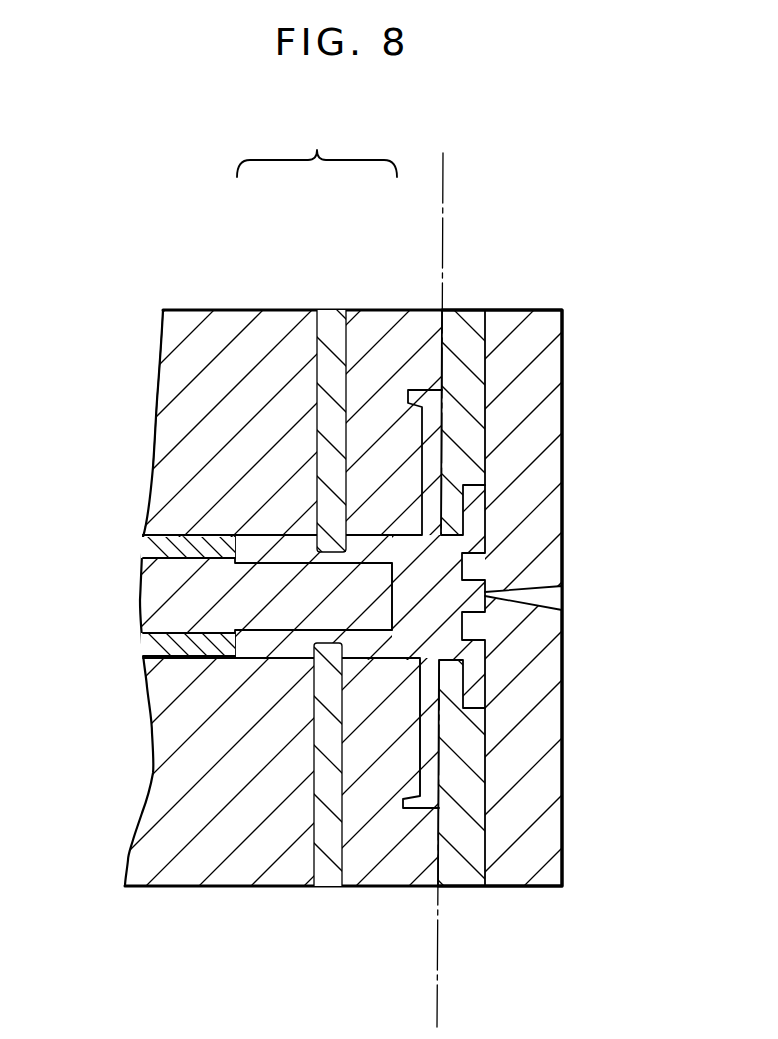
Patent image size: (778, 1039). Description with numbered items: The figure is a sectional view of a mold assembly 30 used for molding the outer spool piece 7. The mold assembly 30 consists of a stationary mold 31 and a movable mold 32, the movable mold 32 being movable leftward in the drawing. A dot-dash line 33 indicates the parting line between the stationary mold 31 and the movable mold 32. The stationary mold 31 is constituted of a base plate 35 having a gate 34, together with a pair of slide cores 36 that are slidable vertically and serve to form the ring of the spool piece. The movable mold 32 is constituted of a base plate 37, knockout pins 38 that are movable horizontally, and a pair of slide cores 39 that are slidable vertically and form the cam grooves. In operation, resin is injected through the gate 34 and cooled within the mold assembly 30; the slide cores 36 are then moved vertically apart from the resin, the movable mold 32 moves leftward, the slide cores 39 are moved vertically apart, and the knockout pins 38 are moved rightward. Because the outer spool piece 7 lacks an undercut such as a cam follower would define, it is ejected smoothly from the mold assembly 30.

The mold assembly 30 is at (317, 145).
The stationary mold 31 is at (500, 291).
The movable mold 32 is at (263, 272).
The dot-dash line 33 is at (445, 183).
The gate 34 is at (545, 600).
The base plate 35 is at (508, 490).
The slide cores 36 is at (463, 417).
The base plate 37 is at (173, 394).
The knockout pins 38 is at (158, 548).
The slide cores 39 is at (335, 358).
The outer spool piece 7 is at (408, 636).